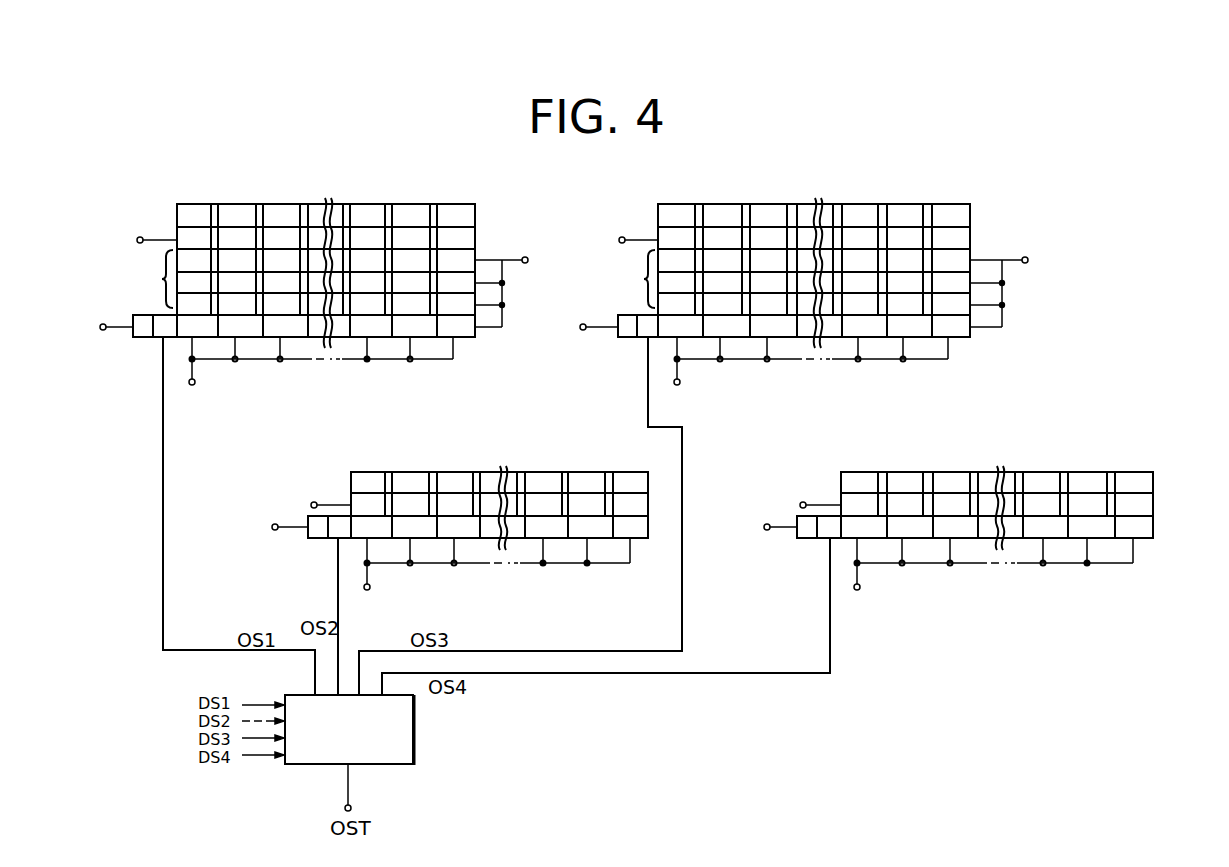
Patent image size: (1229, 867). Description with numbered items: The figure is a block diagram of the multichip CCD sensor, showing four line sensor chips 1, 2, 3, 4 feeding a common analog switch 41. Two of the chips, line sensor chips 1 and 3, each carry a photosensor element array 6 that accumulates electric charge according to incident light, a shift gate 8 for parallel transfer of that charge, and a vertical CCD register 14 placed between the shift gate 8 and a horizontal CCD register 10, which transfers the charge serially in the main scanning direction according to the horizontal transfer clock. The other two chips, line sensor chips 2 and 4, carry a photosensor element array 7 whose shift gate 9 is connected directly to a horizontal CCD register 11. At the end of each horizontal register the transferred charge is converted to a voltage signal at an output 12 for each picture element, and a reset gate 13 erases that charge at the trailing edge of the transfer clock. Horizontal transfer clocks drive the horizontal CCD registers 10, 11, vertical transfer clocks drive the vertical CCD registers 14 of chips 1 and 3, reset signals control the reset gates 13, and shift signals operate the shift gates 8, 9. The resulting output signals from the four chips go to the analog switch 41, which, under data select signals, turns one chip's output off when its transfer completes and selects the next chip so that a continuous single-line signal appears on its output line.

The line sensor chip 1 is at (328, 190).
The line sensor chip 2 is at (510, 455).
The line sensor chip 3 is at (822, 190).
The line sensor chip 4 is at (1008, 455).
The photosensor element array 6 is at (475, 212).
The photosensor element array 7 is at (351, 479).
The shift gate 8 is at (475, 238).
The shift gate 9 is at (651, 505).
The horizontal CCD register 10 is at (475, 337).
The horizontal CCD register 11 is at (650, 540).
The output 12 is at (156, 340).
The reset gate 13 is at (141, 340).
The vertical CCD register 14 is at (153, 279).
The analog switch 41 is at (413, 730).